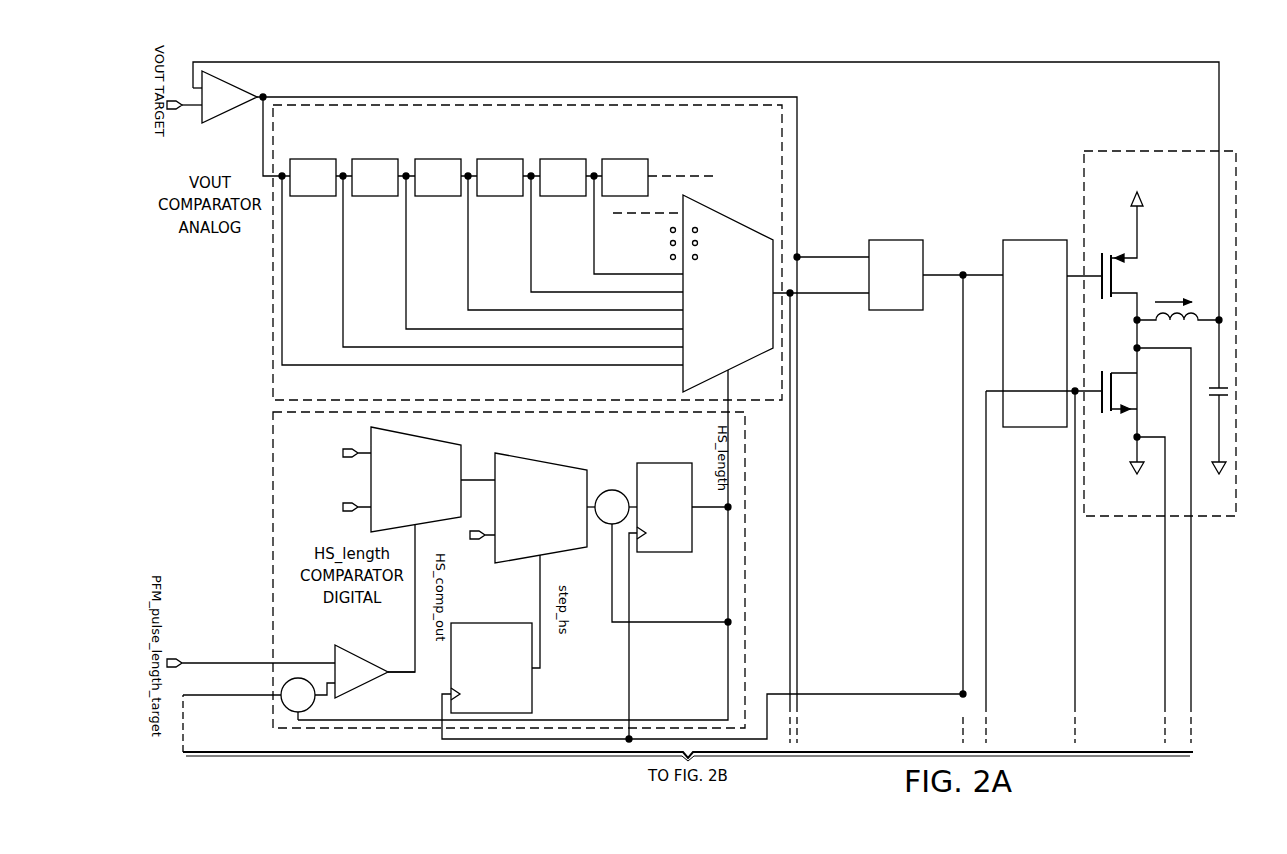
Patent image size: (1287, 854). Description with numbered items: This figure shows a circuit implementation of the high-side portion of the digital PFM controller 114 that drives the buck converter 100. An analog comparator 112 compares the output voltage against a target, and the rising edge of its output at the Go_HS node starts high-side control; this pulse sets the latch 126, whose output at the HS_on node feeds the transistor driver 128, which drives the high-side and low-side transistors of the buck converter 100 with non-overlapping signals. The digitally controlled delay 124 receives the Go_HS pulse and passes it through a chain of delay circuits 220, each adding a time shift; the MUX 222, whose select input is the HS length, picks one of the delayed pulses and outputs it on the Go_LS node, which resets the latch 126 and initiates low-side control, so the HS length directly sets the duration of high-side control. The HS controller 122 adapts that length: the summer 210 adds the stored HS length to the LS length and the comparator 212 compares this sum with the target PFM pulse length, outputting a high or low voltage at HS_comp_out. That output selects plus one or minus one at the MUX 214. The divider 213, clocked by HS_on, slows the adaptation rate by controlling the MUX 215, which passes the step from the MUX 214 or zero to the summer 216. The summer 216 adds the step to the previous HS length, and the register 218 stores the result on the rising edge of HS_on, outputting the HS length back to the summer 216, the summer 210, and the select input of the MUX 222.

The buck converter 100 is at (1170, 150).
The comparator 112 is at (230, 120).
The digital PFM controller 114 is at (970, 140).
The HS controller 122 is at (272, 582).
The digitally controlled delay 124 is at (272, 264).
The latch 126 is at (897, 240).
The transistor driver 128 is at (1034, 240).
The summer 210 is at (318, 710).
The comparator 212 is at (360, 650).
The divider 213 is at (532, 680).
The MUX 214 is at (426, 430).
The MUX 215 is at (553, 462).
The summer 216 is at (605, 490).
The register 218 is at (665, 552).
The delay circuits 220 is at (310, 158).
The MUX 222 is at (583, 469).